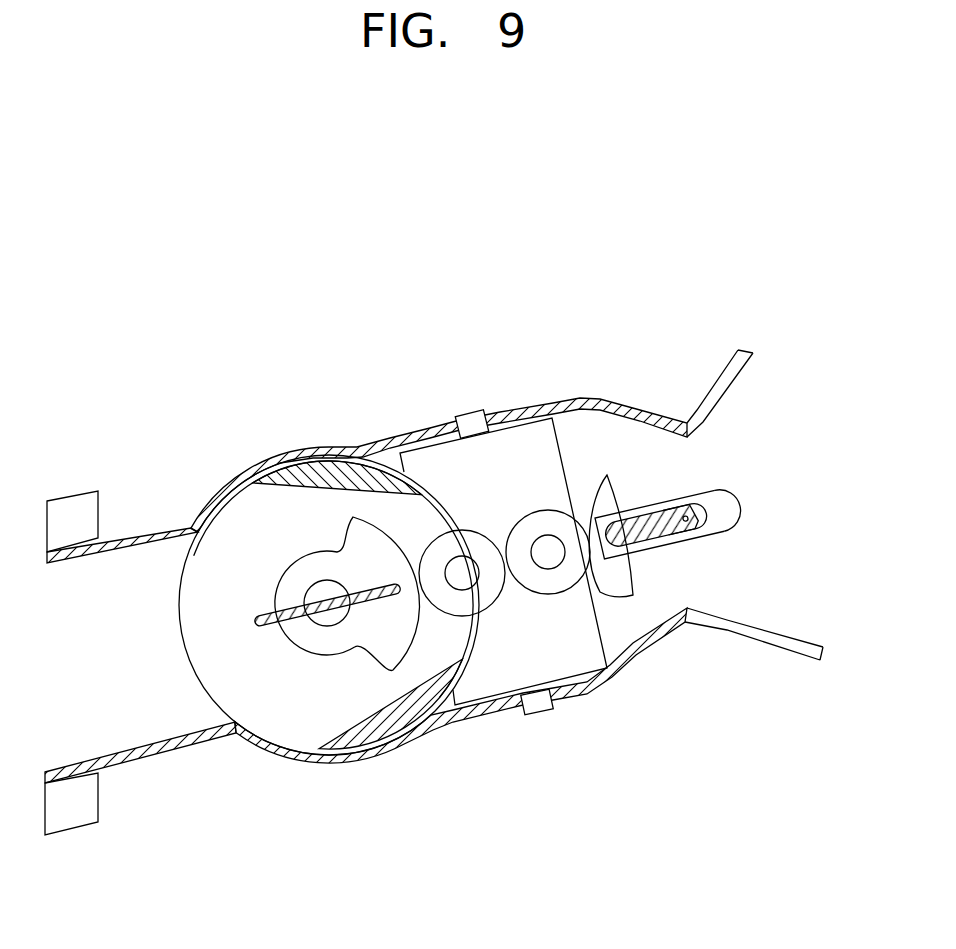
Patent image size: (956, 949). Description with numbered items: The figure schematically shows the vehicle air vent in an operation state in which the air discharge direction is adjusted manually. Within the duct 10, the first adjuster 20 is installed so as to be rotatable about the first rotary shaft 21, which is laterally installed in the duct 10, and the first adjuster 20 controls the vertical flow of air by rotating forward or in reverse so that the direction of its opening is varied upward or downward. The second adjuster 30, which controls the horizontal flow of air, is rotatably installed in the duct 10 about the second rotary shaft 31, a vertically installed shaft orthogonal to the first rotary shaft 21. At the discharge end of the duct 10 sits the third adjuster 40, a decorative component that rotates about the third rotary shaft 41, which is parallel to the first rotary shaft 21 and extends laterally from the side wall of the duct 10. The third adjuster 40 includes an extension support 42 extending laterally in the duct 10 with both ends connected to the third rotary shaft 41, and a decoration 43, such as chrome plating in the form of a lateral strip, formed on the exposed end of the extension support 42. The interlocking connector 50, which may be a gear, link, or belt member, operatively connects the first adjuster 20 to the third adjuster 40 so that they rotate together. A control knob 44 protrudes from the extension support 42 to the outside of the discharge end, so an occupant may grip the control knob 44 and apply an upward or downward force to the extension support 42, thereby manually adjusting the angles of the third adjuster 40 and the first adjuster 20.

The duct 10 is at (140, 530).
The first adjuster 20 is at (357, 760).
The first rotary shaft 21 is at (332, 582).
The second adjuster 30 is at (571, 458).
The second rotary shaft 31 is at (472, 415).
The third adjuster 40 is at (650, 500).
The third rotary shaft 41 is at (684, 516).
The extension support 42 is at (662, 530).
The decoration 43 is at (700, 530).
The control knob 44 is at (727, 510).
The interlocking connector 50 is at (557, 615).